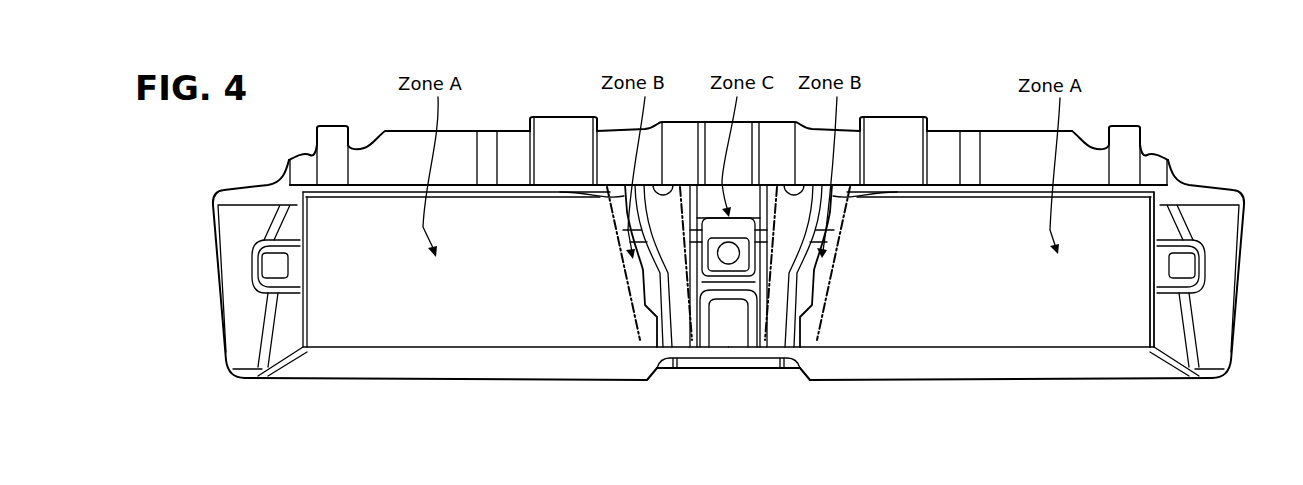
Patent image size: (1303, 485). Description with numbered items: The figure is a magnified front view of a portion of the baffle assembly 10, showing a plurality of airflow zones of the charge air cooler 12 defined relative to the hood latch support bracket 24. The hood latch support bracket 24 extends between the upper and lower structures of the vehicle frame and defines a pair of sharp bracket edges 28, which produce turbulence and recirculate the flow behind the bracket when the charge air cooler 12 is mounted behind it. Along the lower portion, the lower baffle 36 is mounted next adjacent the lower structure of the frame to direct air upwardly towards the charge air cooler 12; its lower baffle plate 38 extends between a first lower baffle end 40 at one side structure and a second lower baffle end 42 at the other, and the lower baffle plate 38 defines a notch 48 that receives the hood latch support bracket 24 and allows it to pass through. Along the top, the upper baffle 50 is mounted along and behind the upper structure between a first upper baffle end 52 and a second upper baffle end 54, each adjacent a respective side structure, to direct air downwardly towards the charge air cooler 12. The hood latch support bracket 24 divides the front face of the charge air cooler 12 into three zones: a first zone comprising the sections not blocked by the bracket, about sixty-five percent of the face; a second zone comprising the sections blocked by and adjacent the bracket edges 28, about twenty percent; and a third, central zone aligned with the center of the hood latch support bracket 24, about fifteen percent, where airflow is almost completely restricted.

The baffle assembly 10 is at (1126, 121).
The charge air cooler 12 is at (1118, 310).
The hood latch support bracket 24 is at (722, 367).
The bracket edges 28 is at (645, 293).
The lower baffle 36 is at (942, 380).
The lower baffle plate 38 is at (887, 360).
The first lower baffle end 40 is at (1233, 343).
The second lower baffle end 42 is at (220, 317).
The notch 48 is at (800, 370).
The upper baffle 50 is at (988, 131).
The first upper baffle end 52 is at (1143, 138).
The second upper baffle end 54 is at (307, 157).